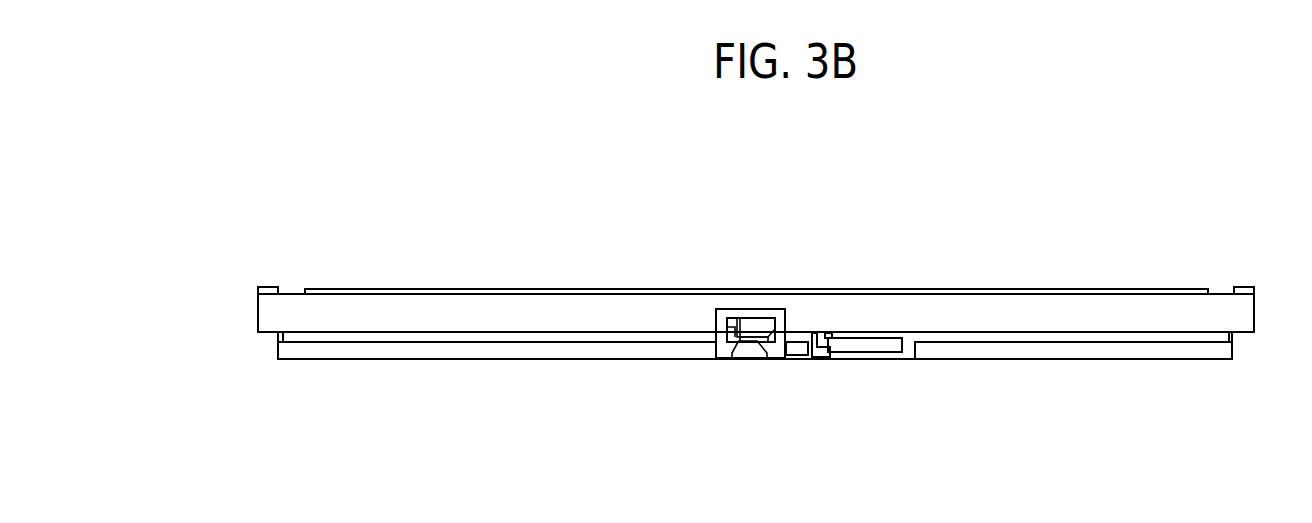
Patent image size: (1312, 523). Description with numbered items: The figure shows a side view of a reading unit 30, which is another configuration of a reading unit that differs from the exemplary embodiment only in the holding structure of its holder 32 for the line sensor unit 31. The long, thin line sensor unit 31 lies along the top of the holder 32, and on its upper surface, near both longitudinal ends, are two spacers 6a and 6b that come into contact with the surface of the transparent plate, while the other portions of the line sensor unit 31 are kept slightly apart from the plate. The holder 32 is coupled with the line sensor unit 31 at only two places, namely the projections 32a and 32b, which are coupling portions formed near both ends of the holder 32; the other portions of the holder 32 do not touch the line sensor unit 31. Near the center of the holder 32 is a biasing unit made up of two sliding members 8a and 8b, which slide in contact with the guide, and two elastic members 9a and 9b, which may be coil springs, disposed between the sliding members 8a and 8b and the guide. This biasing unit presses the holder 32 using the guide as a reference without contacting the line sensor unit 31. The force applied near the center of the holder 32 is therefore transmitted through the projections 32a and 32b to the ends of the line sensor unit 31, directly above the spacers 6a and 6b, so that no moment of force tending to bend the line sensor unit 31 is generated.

The reading unit 30 is at (245, 447).
The spacer 6a is at (265, 284).
The spacer 6b is at (1243, 285).
The line sensor unit 31 is at (1102, 303).
The holder 32 is at (1073, 352).
The projection 32a is at (268, 342).
The projection 32b is at (1240, 338).
The sliding member 8a is at (732, 350).
The sliding member 8b is at (750, 333).
The elastic member 9a is at (755, 333).
The elastic member 9b is at (754, 339).